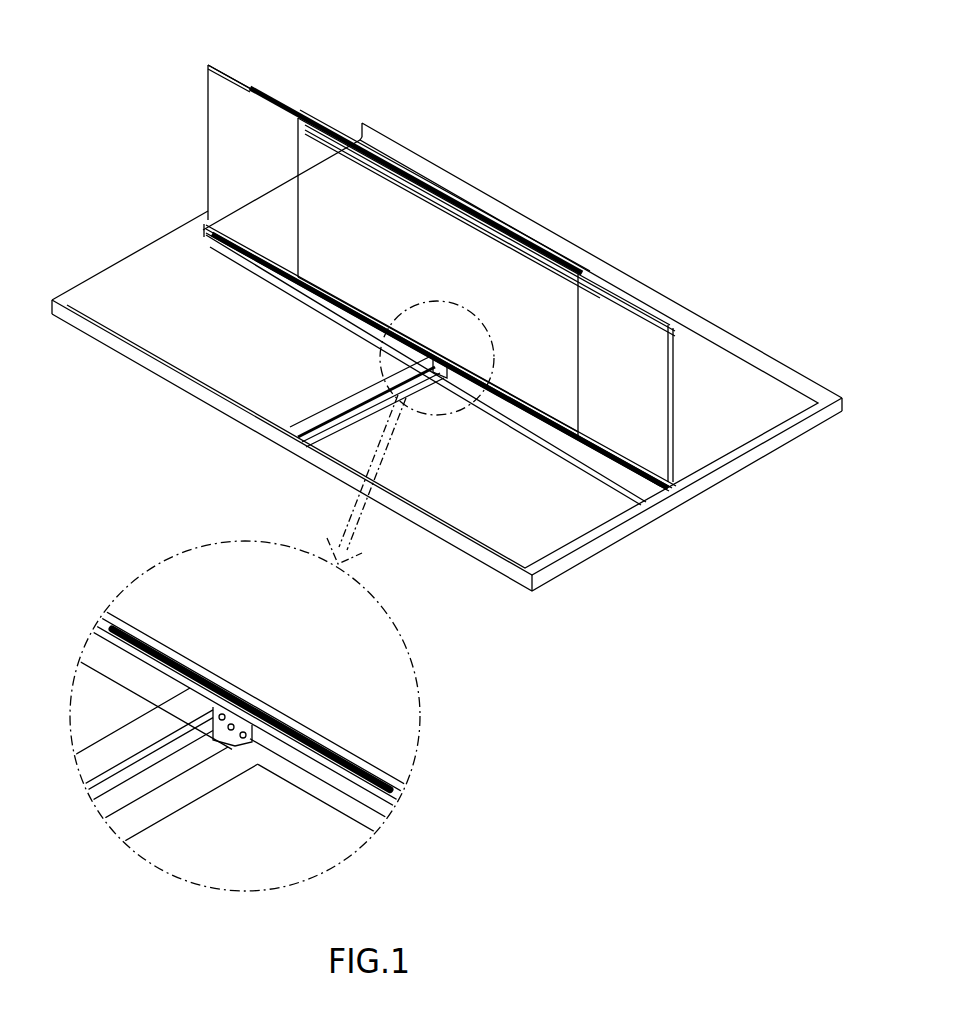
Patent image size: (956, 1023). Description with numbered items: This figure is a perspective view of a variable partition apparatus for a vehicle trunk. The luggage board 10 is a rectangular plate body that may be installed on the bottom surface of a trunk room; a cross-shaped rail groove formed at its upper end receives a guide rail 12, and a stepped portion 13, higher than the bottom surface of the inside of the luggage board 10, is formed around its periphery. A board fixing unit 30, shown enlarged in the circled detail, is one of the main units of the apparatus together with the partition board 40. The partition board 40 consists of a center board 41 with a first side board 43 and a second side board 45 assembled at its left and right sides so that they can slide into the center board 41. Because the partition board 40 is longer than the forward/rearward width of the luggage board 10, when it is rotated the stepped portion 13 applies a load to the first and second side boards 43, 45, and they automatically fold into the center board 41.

The luggage board 10 is at (468, 565).
The guide rail 12 is at (353, 427).
The stepped portion 13 is at (780, 385).
The board fixing unit 30 is at (345, 778).
The partition board 40 is at (528, 224).
The center board 41 is at (432, 207).
The first side board 43 is at (255, 100).
The second side board 45 is at (623, 320).